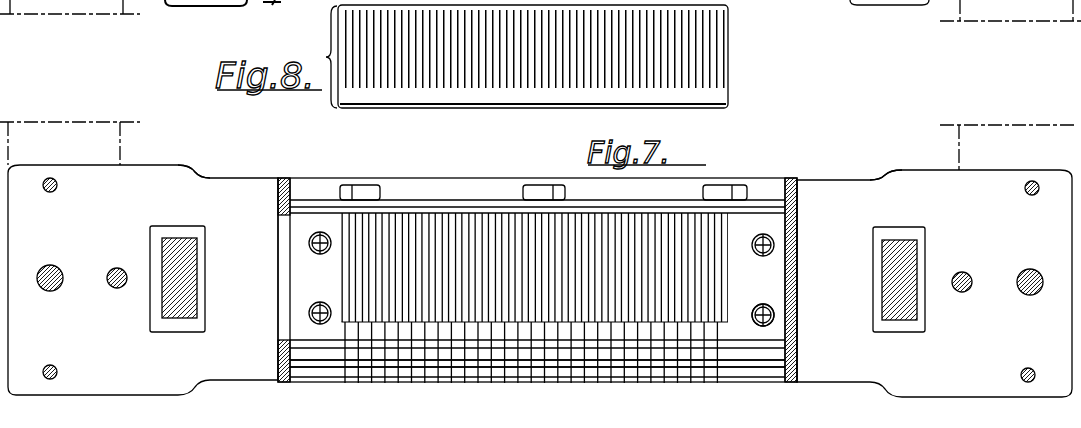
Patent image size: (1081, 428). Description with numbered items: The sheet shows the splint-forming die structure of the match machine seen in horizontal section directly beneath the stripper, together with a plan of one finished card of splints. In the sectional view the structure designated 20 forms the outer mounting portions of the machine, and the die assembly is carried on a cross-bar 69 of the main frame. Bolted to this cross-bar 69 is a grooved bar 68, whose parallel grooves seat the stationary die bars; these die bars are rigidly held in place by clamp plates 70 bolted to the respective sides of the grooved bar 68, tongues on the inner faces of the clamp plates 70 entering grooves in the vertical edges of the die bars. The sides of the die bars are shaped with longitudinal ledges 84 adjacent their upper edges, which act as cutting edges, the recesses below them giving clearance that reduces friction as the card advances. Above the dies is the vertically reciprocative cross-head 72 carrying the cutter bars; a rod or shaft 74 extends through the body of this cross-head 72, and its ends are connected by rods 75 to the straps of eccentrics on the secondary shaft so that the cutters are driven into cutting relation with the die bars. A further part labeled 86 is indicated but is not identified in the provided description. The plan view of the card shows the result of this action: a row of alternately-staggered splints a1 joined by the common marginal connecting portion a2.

In FIG. 7, the main frame 20 is at (540, 266).
In FIG. 7, the cross-bar 69 is at (228, 178).
In FIG. 7, the rods 75 is at (200, 298).
In FIG. 7, the grooved bar 68 is at (377, 215).
In FIG. 7, the clamp plates 70 is at (396, 218).
In FIG. 7, the cross-head 72 is at (405, 222).
In FIG. 7, the longitudinal ledges 84 is at (428, 228).
In FIG. 7, the rod or shaft 74 is at (707, 330).
In FIG. 7, the lower bar 86 is at (710, 355).
In FIG. 8, the staggered splints a1 is at (730, 30).
In FIG. 8, the marginal connecting portion a2 is at (722, 103).